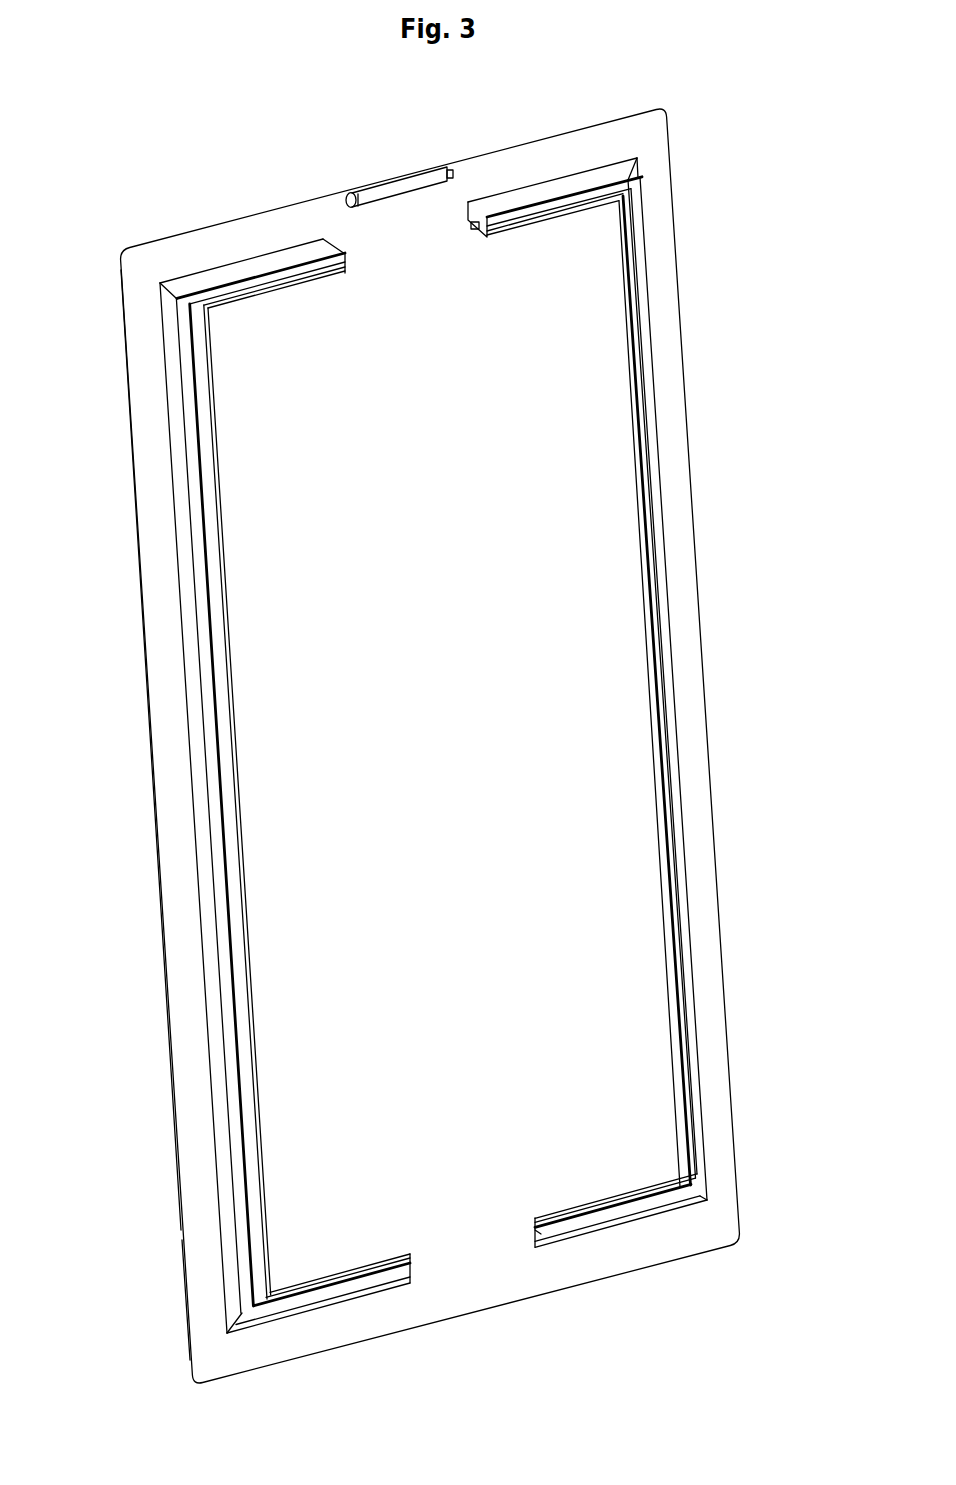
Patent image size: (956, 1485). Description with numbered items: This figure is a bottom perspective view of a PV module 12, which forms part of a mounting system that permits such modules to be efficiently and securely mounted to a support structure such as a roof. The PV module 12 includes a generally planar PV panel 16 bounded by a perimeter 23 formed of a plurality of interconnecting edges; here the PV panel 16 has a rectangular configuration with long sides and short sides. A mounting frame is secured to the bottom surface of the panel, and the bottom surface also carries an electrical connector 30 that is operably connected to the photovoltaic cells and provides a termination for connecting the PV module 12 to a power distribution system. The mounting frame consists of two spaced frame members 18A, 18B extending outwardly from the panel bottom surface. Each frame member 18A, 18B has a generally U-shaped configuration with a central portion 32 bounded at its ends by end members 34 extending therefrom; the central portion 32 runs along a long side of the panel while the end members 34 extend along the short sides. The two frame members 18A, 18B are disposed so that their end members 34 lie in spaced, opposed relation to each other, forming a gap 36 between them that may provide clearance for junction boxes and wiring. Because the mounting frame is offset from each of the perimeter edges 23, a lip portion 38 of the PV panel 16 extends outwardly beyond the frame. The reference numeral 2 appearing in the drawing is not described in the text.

The door assembly 2 is at (677, 1202).
The PV module 12 is at (707, 291).
The PV panel 16 is at (508, 168).
The first frame member 18A is at (204, 592).
The second frame member 18B is at (651, 468).
The perimeter 23 is at (130, 412).
The electrical connector 30 is at (347, 187).
The central portion 32 is at (652, 706).
The end members 34 is at (535, 1243).
The gap 36 is at (420, 253).
The lip portion 38 is at (200, 1227).